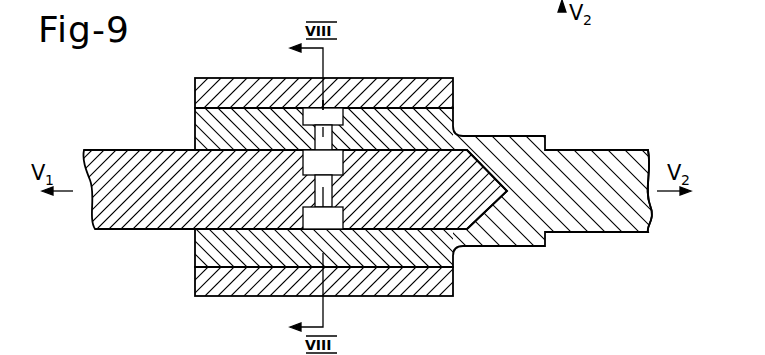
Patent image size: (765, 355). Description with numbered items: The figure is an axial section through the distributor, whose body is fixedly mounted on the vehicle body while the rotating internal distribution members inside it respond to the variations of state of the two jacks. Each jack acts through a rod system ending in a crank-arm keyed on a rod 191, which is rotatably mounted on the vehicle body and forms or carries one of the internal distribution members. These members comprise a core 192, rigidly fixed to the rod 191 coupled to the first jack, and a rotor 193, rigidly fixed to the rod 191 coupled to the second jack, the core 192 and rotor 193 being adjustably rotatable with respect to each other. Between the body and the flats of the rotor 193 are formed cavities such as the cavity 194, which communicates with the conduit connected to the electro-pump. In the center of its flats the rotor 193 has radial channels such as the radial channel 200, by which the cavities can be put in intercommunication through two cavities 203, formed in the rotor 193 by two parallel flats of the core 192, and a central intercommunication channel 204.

The rod 191 is at (135, 212).
The core 192 is at (329, 181).
The rotor 193 is at (443, 131).
The cavity 194 is at (340, 110).
The radial channel 200 is at (318, 138).
The cavities 203 is at (333, 163).
The central intercommunication channel 204 is at (314, 190).